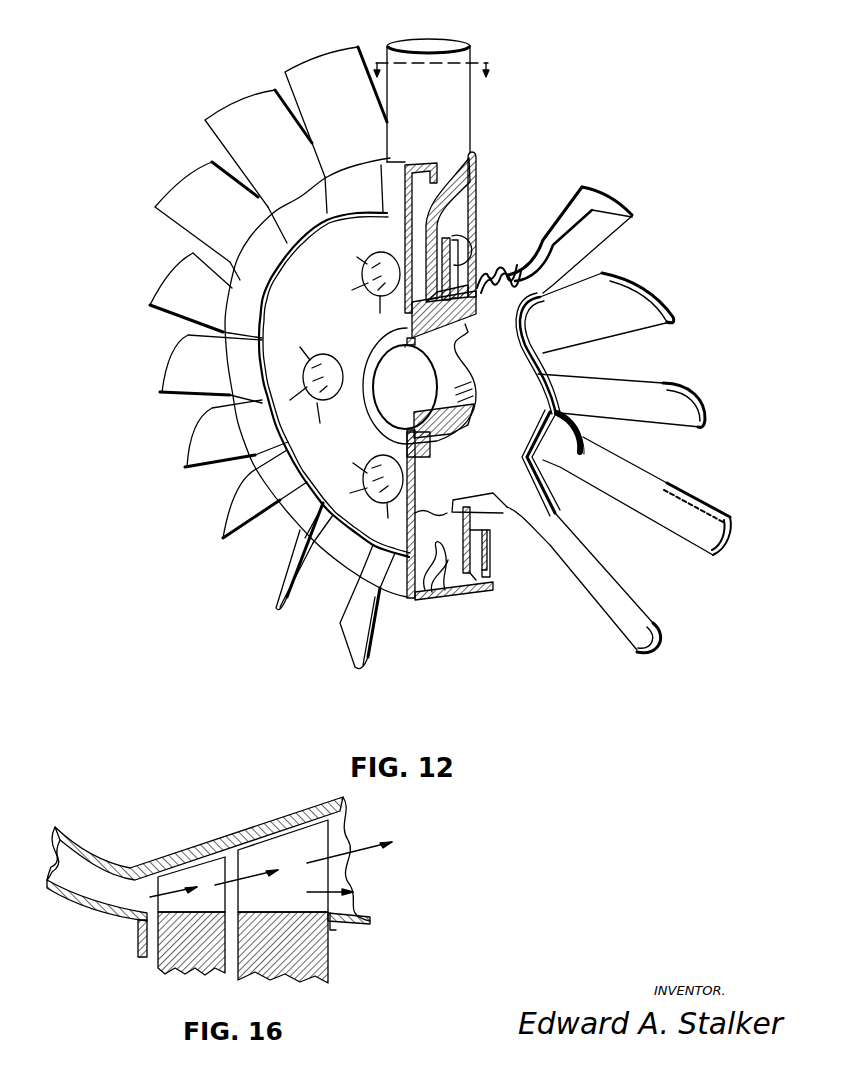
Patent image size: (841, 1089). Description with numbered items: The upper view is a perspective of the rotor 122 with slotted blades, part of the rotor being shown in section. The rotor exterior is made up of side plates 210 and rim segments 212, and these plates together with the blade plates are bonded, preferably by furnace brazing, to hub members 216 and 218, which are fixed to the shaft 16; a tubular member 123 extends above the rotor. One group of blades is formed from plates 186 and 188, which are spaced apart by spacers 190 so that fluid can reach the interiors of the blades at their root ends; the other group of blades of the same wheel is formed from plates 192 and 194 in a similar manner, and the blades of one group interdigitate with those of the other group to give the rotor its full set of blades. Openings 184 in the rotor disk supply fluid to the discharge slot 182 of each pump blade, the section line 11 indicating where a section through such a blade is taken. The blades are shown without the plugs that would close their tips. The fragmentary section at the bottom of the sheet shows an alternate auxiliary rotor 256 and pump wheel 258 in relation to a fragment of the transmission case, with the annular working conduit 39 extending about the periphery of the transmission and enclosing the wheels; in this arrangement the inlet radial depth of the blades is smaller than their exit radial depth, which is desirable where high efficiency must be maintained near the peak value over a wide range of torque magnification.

In FIG. 12, the section line 11 is at (433, 57).
In FIG. 12, the shaft tube 123 is at (453, 74).
In FIG. 12, the rim segments 212 is at (352, 203).
In FIG. 12, the side plates 210 is at (314, 320).
In FIG. 12, the openings 184 is at (362, 278).
In FIG. 12, the spacers 190 is at (419, 390).
In FIG. 12, the shaft 16 is at (414, 400).
In FIG. 12, the hub member 216 is at (419, 359).
In FIG. 12, the hub member 218 is at (479, 275).
In FIG. 12, the discharge slot 182 is at (639, 182).
In FIG. 12, the plate 186 is at (543, 414).
In FIG. 12, the plate 188 is at (540, 440).
In FIG. 12, the plate 194 is at (577, 420).
In FIG. 12, the plate 192 is at (565, 433).
In FIG. 12, the rotor assembly 122 is at (177, 512).
In FIG. 16, the working conduit 39 is at (106, 895).
In FIG. 16, the auxiliary rotor 256 is at (165, 975).
In FIG. 16, the pump wheel 258 is at (257, 962).